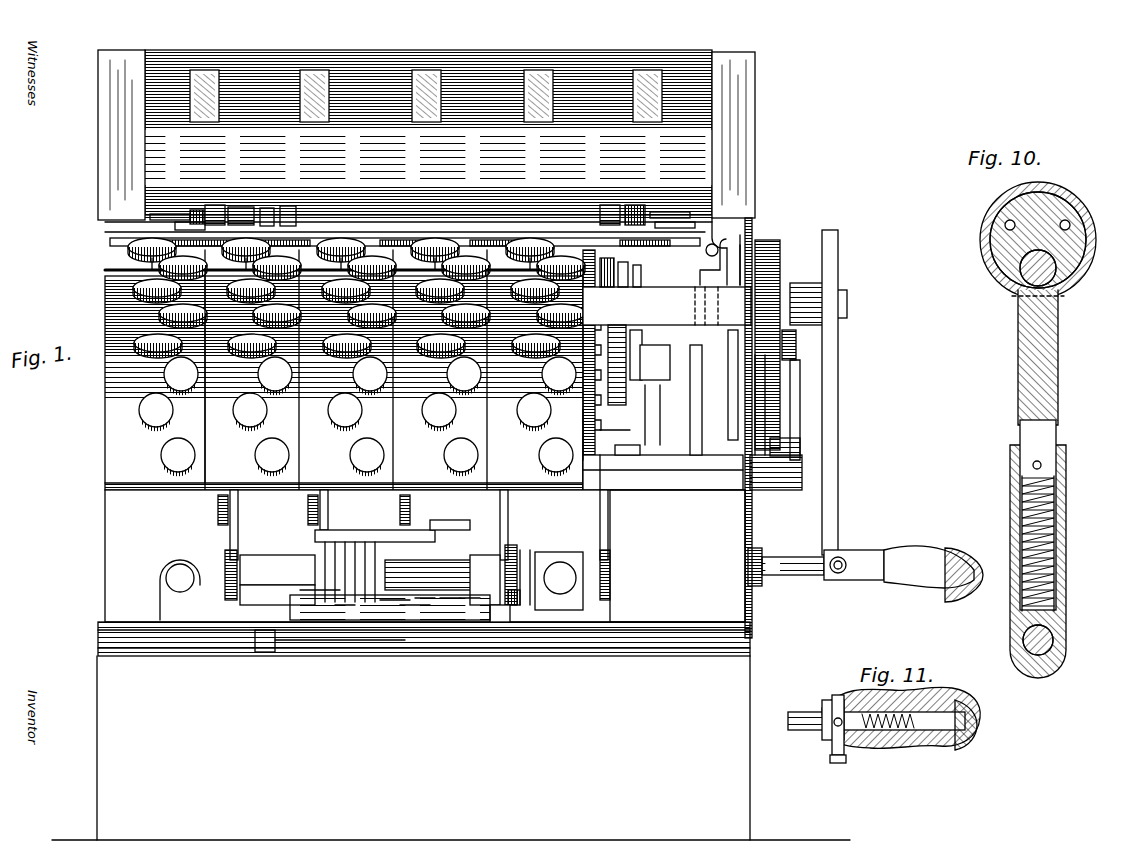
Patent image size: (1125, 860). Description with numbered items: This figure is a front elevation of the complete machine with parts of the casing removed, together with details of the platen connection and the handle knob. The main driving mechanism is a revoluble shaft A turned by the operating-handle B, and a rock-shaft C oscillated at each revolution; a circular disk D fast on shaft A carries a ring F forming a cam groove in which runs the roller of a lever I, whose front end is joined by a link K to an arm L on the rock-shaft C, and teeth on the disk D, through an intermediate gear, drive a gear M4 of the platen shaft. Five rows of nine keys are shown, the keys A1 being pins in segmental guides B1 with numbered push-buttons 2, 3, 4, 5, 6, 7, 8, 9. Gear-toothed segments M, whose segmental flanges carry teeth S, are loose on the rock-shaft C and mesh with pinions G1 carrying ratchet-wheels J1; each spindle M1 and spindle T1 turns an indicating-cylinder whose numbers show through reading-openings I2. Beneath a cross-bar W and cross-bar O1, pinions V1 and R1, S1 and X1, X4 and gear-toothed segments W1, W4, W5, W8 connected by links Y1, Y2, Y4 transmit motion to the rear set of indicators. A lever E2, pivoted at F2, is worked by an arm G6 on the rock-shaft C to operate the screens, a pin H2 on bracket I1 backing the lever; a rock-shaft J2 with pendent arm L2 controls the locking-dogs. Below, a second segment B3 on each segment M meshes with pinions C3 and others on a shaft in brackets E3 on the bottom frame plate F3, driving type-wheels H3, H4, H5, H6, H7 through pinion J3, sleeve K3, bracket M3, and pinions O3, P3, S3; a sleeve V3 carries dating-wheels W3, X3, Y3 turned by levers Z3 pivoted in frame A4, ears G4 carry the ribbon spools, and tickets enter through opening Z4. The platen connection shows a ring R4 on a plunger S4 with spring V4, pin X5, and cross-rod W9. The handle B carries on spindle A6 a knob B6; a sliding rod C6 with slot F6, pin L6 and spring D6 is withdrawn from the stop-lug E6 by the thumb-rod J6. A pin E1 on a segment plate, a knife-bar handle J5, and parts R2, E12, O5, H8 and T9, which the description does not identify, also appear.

In FIG. 1, the reading-openings I2 is at (633, 95).
In FIG. 1, the gear-toothed segment W8 is at (218, 205).
In FIG. 1, the gear-toothed segment W4 is at (240, 207).
In FIG. 1, the link Y1 is at (270, 208).
In FIG. 1, the link Y2 is at (292, 210).
In FIG. 1, the pinion X4 is at (168, 210).
In FIG. 1, the link Y4 is at (190, 219).
In FIG. 1, the gear-toothed segment W1 is at (608, 205).
In FIG. 1, the gear-toothed segment W5 is at (636, 205).
In FIG. 1, the pinion X1 is at (670, 213).
In FIG. 1, the pinion V1 is at (682, 220).
In FIG. 1, the pinion S1 is at (411, 235).
In FIG. 1, the pinion R1 is at (428, 233).
In FIG. 1, the key 2 is at (341, 254).
In FIG. 1, the key 3 is at (372, 268).
In FIG. 1, the key 4 is at (346, 291).
In FIG. 1, the key 5 is at (372, 316).
In FIG. 1, the key 6 is at (347, 346).
In FIG. 1, the key 7 is at (370, 376).
In FIG. 1, the key 8 is at (345, 412).
In FIG. 1, the key 9 is at (367, 457).
In FIG. 1, the segmental guides B1 is at (344, 463).
In FIG. 1, the keys A1 is at (262, 452).
In FIG. 1, the vertical spindle T1 is at (593, 370).
In FIG. 1, the cross-bar W is at (667, 306).
In FIG. 1, the rack R2 is at (599, 283).
In FIG. 1, the pinion G1 is at (617, 286).
In FIG. 1, the ratchet-wheel J1 is at (632, 287).
In FIG. 1, the pivot F2 is at (706, 254).
In FIG. 1, the vertical spindle M1 is at (698, 278).
In FIG. 1, the lever E2 is at (735, 225).
In FIG. 1, the circular disk D is at (755, 236).
In FIG. 1, the ring F is at (782, 275).
In FIG. 1, the revoluble shaft A is at (848, 300).
In FIG. 1, the lever I is at (798, 348).
In FIG. 1, the link K is at (800, 390).
In FIG. 1, the gear M4 is at (768, 412).
In FIG. 1, the cross-bar O1 is at (734, 385).
In FIG. 1, the arm L is at (800, 445).
In FIG. 1, the operating-handle B is at (838, 456).
In FIG. 1, the rock-shaft C is at (700, 478).
In FIG. 1, the rock-shaft J2 is at (652, 355).
In FIG. 1, the pendent arm L2 is at (617, 365).
In FIG. 10, the pendent arm L2 is at (1038, 268).
In FIG. 1, the pin H2 is at (690, 380).
In FIG. 1, the gear-toothed segments M is at (615, 430).
In FIG. 1, the arm G6 is at (248, 637).
In FIG. 1, the rod E12 is at (704, 400).
In FIG. 1, the teeth S is at (569, 435).
In FIG. 1, the stop-lug E6 is at (790, 575).
In FIG. 1, the sliding rod C6 is at (812, 555).
In FIG. 11, the sliding rod C6 is at (802, 712).
In FIG. 1, the rod J6 is at (840, 575).
In FIG. 11, the rod J6 is at (838, 763).
In FIG. 1, the grasping-knob B6 is at (940, 548).
In FIG. 11, the grasping-knob B6 is at (965, 752).
In FIG. 1, the pin E1 is at (313, 511).
In FIG. 1, the second segment B3 is at (431, 525).
In FIG. 1, the brackets E3 is at (225, 556).
In FIG. 1, the ears G4 is at (180, 590).
In FIG. 1, the keys or levers Z3 is at (315, 537).
In FIG. 1, the sleeve V3 is at (277, 570).
In FIG. 1, the frame A4 is at (277, 582).
In FIG. 1, the dating-wheel Y3 is at (338, 570).
In FIG. 1, the dating-wheel X3 is at (358, 572).
In FIG. 1, the dating-wheel W3 is at (378, 574).
In FIG. 1, the type-wheel H4 is at (400, 570).
In FIG. 1, the type-wheel H3 is at (485, 580).
In FIG. 1, the bar O5 is at (445, 518).
In FIG. 1, the pinion J3 is at (530, 553).
In FIG. 1, the bracket M3 is at (559, 581).
In FIG. 1, the sleeve K3 is at (525, 600).
In FIG. 1, the handle J5 is at (512, 615).
In FIG. 1, the pinion C3 is at (612, 565).
In FIG. 1, the bottom-frame plate F3 is at (695, 620).
In FIG. 1, the opening Z4 is at (355, 620).
In FIG. 1, the type-wheel H7 is at (385, 618).
In FIG. 1, the type-wheel H6 is at (402, 616).
In FIG. 1, the type-wheel H5 is at (422, 616).
In FIG. 1, the pinion O3 is at (442, 616).
In FIG. 1, the pin H8 is at (478, 640).
In FIG. 1, the pinion S3 is at (348, 660).
In FIG. 1, the pinion P3 is at (415, 660).
In FIG. 10, the ring R4 is at (1085, 212).
In FIG. 10, the bracket I1 is at (1095, 240).
In FIG. 10, the plunger S4 is at (1018, 332).
In FIG. 10, the coiled spring V4 is at (1022, 522).
In FIG. 10, the pin X5 is at (1032, 466).
In FIG. 10, the spring T9 is at (1022, 500).
In FIG. 10, the rear cross-rod W9 is at (1022, 638).
In FIG. 11, the slot F6 is at (822, 728).
In FIG. 11, the pin L6 is at (834, 745).
In FIG. 11, the spiral spring D6 is at (884, 732).
In FIG. 11, the spindle A6 is at (920, 748).